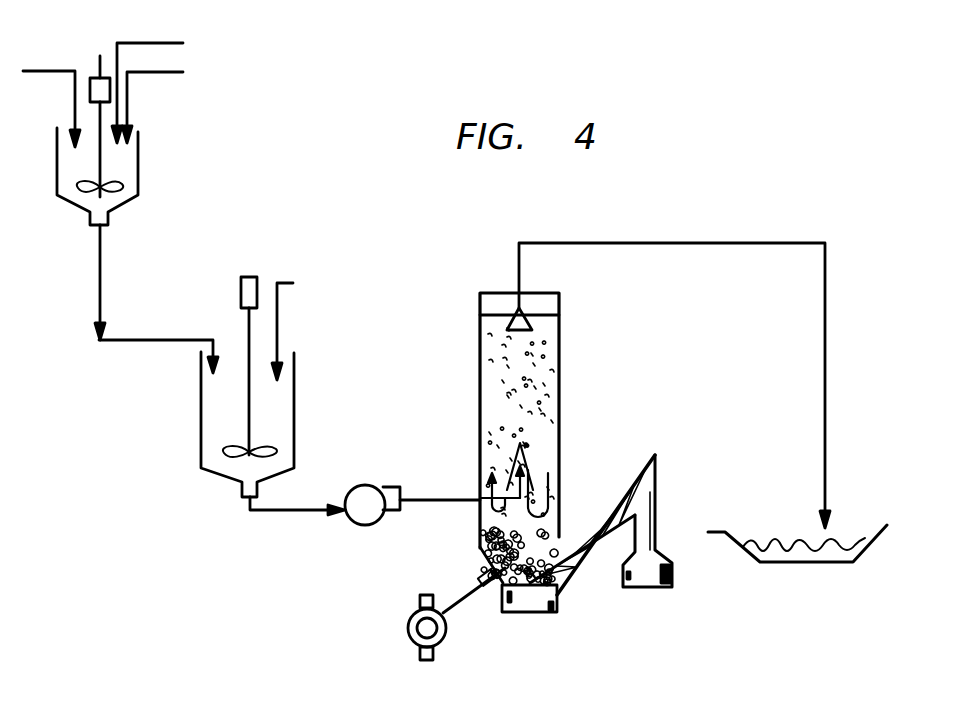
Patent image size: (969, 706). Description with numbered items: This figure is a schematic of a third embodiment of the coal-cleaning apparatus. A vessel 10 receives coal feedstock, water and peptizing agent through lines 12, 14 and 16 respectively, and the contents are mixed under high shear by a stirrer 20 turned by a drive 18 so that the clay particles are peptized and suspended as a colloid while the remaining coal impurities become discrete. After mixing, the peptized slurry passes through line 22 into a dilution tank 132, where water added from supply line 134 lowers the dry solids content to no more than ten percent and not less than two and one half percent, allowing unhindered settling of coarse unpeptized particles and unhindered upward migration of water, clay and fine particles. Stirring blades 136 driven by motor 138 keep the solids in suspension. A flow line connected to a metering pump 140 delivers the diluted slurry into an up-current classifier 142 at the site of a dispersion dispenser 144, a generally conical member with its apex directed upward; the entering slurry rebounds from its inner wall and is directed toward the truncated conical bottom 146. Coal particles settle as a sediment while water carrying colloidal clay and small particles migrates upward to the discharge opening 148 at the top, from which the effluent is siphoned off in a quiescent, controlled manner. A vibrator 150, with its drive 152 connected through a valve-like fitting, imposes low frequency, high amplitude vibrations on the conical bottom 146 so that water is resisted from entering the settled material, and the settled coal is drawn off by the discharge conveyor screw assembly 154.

The vessel 10 is at (138, 157).
The coal feedstock line 12 is at (42, 71).
The water line 14 is at (183, 43).
The peptizing agent line 16 is at (163, 72).
The stirrer motor 18 is at (100, 58).
The stirrer 20 is at (82, 193).
The transfer line 22 is at (101, 272).
The dilution tank 132 is at (296, 400).
The water supply line 134 is at (293, 283).
The stirring blades 136 is at (225, 458).
The motor 138 is at (252, 277).
The metering pump 140 is at (360, 525).
The up-current classifier 142 is at (561, 367).
The dispersion dispenser 144 is at (533, 455).
The truncated conical bottom 146 is at (483, 558).
The discharge opening 148 is at (522, 273).
The vibrator 150 is at (485, 588).
The drive 152 is at (407, 630).
The discharge conveyor screw assembly 154 is at (532, 611).